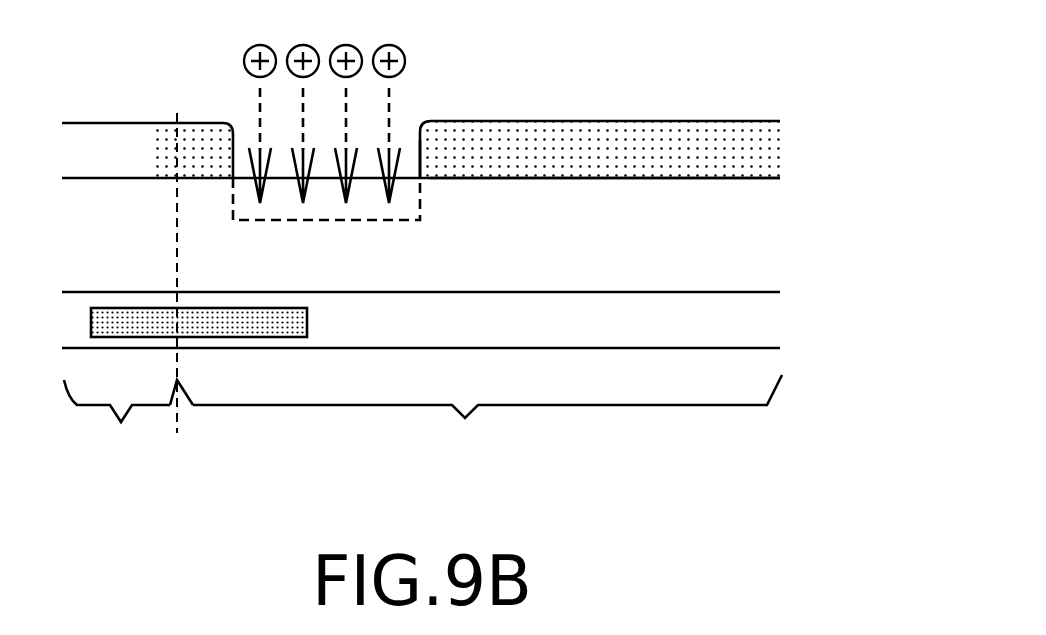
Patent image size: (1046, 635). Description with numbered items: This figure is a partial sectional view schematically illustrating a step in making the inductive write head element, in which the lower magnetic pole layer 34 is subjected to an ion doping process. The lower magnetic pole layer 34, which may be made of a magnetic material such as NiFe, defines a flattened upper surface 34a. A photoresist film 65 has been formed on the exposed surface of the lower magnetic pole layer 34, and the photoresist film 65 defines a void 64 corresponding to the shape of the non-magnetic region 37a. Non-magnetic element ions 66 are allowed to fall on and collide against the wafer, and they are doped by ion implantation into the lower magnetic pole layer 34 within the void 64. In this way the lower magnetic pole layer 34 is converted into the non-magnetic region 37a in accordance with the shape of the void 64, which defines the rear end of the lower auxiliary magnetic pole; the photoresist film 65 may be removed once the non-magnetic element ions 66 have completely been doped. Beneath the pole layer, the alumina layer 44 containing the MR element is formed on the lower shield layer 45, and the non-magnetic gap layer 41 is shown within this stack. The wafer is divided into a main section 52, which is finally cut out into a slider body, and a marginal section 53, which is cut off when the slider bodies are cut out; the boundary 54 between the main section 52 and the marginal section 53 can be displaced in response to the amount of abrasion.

The lower magnetic pole layer 34 is at (150, 190).
The flattened upper surface 34a is at (753, 176).
The photoresist film 65 is at (160, 123).
The void 64 is at (419, 153).
The non-magnetic element ions 66 is at (248, 51).
The non-magnetic region 37a is at (420, 220).
The alumina layer 44 is at (747, 292).
The lower shield layer 45 is at (750, 348).
The non-magnetic gap layer 41 is at (226, 308).
The marginal section 53 is at (117, 427).
The boundary 54 is at (177, 428).
The main section 52 is at (487, 425).